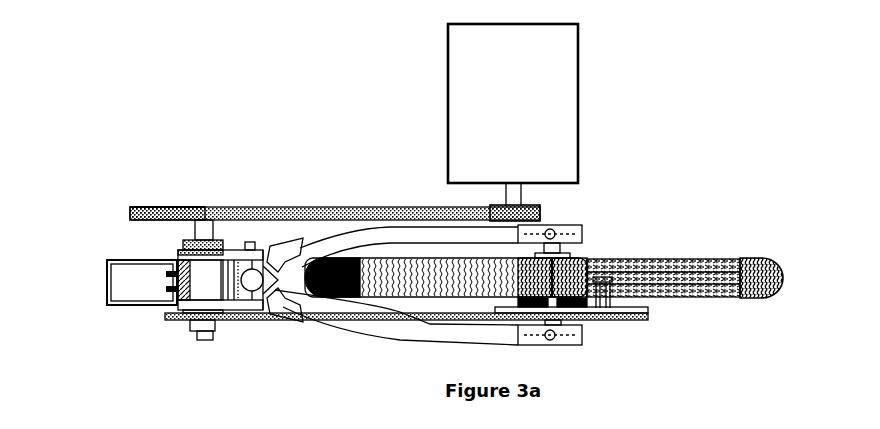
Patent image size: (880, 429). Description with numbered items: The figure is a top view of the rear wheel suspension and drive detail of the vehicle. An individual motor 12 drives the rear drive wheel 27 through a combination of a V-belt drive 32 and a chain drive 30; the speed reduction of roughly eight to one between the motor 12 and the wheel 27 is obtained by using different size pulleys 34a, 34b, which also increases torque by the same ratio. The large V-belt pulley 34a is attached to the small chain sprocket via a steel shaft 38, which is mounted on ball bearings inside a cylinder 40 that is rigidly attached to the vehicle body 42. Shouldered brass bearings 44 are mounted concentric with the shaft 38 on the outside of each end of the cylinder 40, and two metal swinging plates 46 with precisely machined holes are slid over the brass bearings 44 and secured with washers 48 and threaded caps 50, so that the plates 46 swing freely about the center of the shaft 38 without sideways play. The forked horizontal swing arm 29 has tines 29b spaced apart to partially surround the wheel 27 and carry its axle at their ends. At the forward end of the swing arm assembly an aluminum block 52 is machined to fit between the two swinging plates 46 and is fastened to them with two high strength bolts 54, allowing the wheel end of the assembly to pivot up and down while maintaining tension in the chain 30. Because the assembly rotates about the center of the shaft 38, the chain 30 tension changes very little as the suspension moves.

The motor 12 is at (543, 95).
The drive wheel 27 is at (705, 260).
The horizontal swing arm 29 is at (353, 357).
The tines 29b is at (453, 235).
The chain drive 30 is at (280, 317).
The V-belt drive 32 is at (343, 210).
The large V-belt pulley 34a is at (172, 203).
The small pulley 34b is at (542, 214).
The steel shaft 38 is at (195, 233).
The cylinder 40 is at (167, 293).
The vehicle body 42 is at (108, 290).
The brass bearings 44 is at (217, 252).
The swinging plates 46 is at (245, 253).
The washers 48 is at (153, 212).
The threaded caps 50 is at (195, 240).
The aluminum block 52 is at (268, 272).
The high strength bolts 54 is at (265, 263).